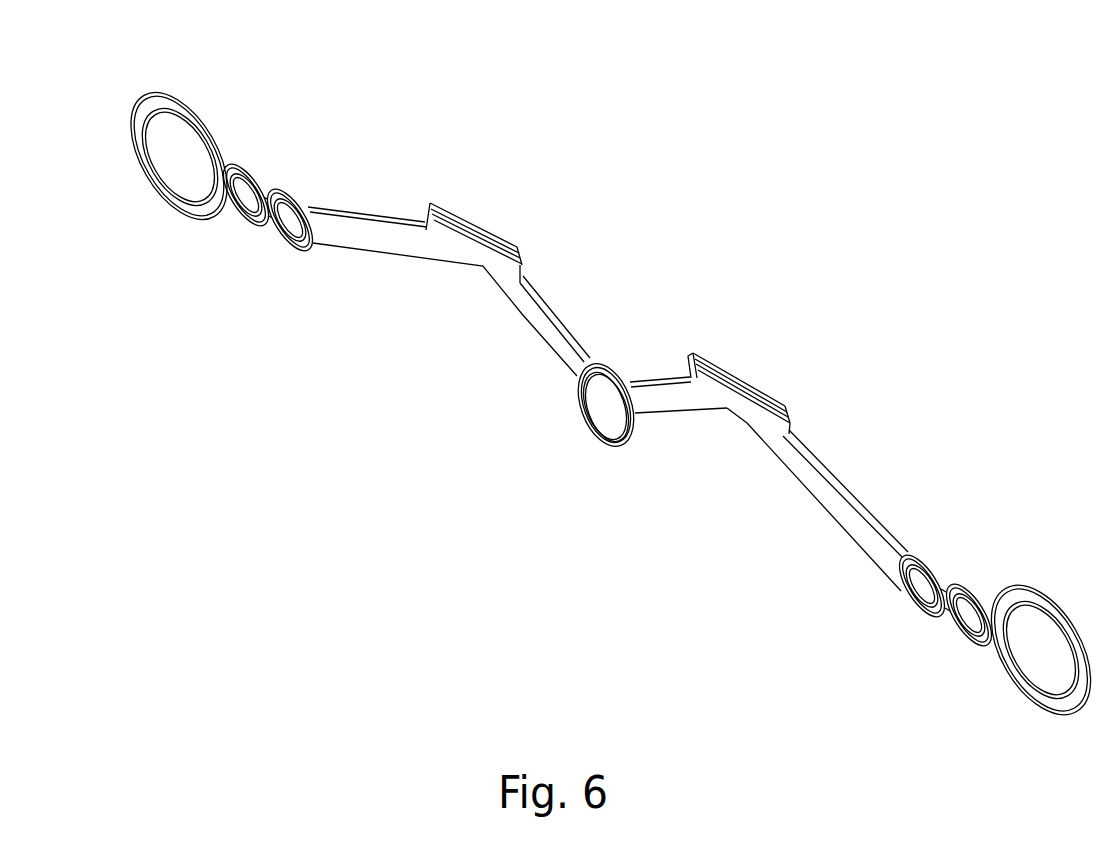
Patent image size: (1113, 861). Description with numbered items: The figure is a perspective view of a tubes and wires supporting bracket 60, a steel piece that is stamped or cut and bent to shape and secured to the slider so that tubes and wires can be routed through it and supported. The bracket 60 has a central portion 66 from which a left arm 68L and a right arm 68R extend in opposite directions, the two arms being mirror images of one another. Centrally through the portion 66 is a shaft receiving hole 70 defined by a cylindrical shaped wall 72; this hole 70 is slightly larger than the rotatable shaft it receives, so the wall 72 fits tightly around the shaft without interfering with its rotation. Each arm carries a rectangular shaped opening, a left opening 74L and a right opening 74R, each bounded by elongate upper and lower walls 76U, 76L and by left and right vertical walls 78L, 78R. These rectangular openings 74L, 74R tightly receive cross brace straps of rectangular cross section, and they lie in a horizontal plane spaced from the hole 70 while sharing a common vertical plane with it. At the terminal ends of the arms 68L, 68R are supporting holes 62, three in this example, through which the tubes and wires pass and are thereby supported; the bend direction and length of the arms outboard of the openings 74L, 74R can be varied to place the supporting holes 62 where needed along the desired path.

The tubes and wires supporting bracket 60 is at (883, 435).
The supporting holes 62 is at (280, 234).
The central portion 66 is at (619, 378).
The left arm 68L is at (386, 225).
The right arm 68R is at (972, 585).
The shaft receiving hole 70 is at (581, 416).
The cylindrical shaped wall 72 is at (611, 428).
The left rectangular shaped opening 74L is at (461, 249).
The right rectangular shaped opening 74R is at (737, 410).
The upper wall 76U is at (453, 227).
The lower wall 76L is at (490, 256).
The left vertical wall 78L is at (430, 205).
The right vertical wall 78R is at (522, 257).